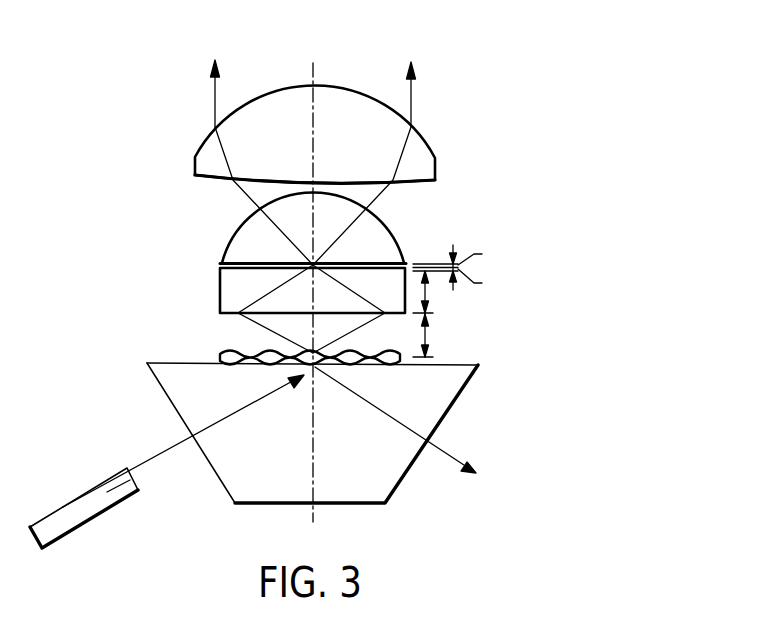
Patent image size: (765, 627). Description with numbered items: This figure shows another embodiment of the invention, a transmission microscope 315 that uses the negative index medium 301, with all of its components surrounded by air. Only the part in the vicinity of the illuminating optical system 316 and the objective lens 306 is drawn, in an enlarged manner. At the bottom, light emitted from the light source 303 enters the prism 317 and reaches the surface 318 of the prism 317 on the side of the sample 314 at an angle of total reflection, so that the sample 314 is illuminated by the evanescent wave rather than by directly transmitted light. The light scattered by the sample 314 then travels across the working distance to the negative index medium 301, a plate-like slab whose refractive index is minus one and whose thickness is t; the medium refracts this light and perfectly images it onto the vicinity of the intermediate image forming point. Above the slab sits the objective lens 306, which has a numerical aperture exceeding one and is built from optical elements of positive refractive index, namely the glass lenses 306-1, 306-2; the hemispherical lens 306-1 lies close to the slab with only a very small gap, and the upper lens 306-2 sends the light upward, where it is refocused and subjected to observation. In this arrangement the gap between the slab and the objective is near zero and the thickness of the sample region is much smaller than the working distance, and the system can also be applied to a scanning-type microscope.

The transmission microscope 315 is at (373, 304).
The objective lens 306 is at (322, 174).
The lens 306-2 is at (430, 165).
The lens 306-1 is at (380, 233).
The negative index medium 301 is at (232, 288).
The sample 314 is at (224, 352).
The surface of the prism 318 is at (462, 364).
The prism 317 is at (392, 468).
The illuminating optical system 316 is at (395, 419).
The light source 303 is at (63, 507).